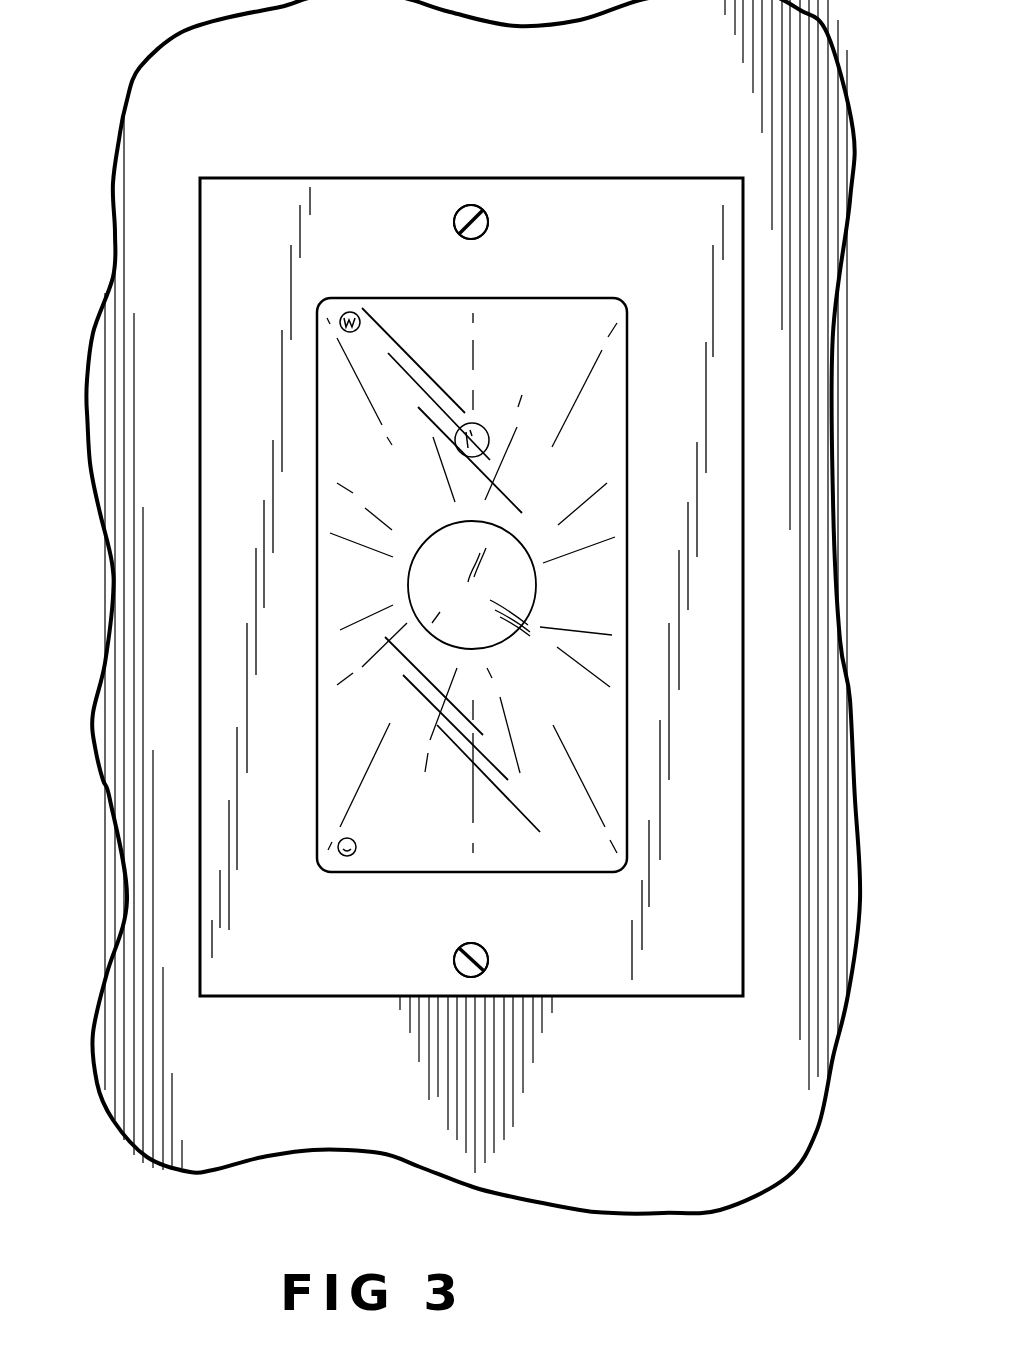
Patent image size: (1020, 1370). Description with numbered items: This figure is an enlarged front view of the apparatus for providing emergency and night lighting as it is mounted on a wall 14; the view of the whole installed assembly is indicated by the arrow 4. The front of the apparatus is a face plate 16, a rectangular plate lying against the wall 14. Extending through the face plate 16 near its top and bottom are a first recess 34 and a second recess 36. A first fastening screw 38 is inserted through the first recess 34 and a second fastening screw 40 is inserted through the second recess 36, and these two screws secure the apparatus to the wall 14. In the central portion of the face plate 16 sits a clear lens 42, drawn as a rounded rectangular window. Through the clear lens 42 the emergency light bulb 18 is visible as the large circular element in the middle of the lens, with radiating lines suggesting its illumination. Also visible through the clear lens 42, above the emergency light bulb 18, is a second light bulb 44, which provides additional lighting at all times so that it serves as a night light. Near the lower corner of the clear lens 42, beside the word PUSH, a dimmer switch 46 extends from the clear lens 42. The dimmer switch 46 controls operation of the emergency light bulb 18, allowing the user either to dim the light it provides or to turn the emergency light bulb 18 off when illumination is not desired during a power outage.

The wall switch assembly 4 is at (785, 560).
The wall 14 is at (195, 107).
The face plate 16 is at (720, 368).
The emergency light bulb 18 is at (523, 580).
The first recess 34 is at (470, 205).
The second recess 36 is at (490, 963).
The first fastening screw 38 is at (484, 225).
The second fastening screw 40 is at (475, 952).
The clear lens 42 is at (620, 463).
The second light bulb 44 is at (478, 433).
The dimmer switch 46 is at (350, 838).